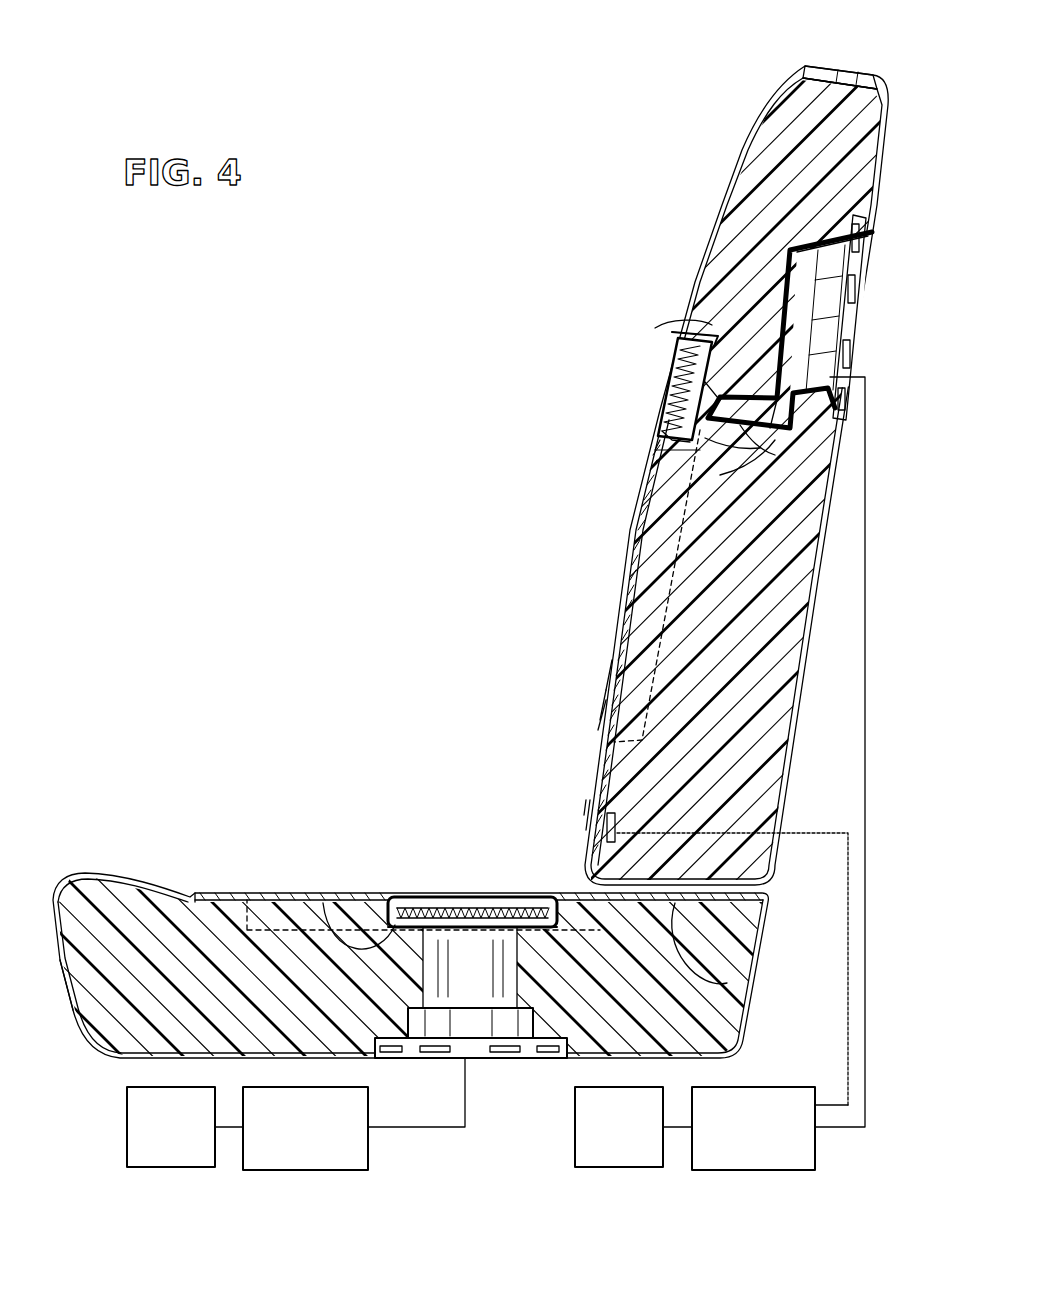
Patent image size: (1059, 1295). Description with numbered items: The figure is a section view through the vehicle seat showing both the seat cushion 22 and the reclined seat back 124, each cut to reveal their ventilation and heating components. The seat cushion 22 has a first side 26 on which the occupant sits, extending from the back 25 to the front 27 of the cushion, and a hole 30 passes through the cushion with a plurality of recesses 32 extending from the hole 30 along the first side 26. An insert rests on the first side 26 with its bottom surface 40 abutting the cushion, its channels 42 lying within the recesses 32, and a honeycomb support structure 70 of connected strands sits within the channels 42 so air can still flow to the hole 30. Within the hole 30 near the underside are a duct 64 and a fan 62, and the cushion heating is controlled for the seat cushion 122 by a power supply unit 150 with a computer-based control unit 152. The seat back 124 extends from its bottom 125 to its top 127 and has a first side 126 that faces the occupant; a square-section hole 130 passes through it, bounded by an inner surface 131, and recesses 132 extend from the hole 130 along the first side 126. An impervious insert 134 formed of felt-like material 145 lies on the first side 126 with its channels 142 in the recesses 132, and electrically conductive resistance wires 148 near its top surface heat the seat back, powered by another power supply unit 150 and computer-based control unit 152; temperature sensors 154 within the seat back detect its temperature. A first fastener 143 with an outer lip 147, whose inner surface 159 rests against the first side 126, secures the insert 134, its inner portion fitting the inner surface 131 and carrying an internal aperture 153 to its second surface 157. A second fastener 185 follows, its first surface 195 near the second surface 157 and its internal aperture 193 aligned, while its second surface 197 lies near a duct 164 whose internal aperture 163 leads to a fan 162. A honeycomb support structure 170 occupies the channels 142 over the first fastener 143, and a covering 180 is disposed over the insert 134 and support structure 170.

The seat cushion 22 is at (479, 963).
The back of the seat cushion 25 is at (770, 895).
The first side of the seat cushion 26 is at (215, 895).
The front of the seat cushion 27 is at (68, 1000).
The hole 30 is at (463, 940).
The recesses 32 is at (393, 908).
The bottom surface of the insert 40 is at (760, 927).
The channels 42 is at (388, 945).
The fan 62 is at (477, 1058).
The duct 64 is at (485, 990).
The honeycomb support structure 70 is at (415, 900).
The seat cushion 122 is at (100, 1046).
The seat back 124 is at (840, 84).
The bottom of the seat back 125 is at (727, 983).
The first side of the seat back 126 is at (585, 827).
The top of the seat back 127 is at (824, 69).
The hole 130 is at (782, 452).
The inner surface of the hole 131 is at (775, 440).
The recesses 132 is at (705, 438).
The impervious insert 134 is at (662, 446).
The channels 142 is at (680, 352).
The first fastener 143 is at (690, 345).
The felt-like material 145 is at (612, 660).
The outer lip 147 is at (700, 338).
The electrically conductive resistance wires 148 is at (605, 690).
The power supply unit 150 is at (168, 1167).
The computer-based control unit 152 is at (305, 1170).
The internal aperture 153 is at (662, 430).
The temperature sensors 154 is at (604, 832).
The second surface of the first fastener 157 is at (706, 382).
The inner surface of the outer lip 159 is at (740, 425).
The fan 162 is at (788, 268).
The internal aperture of the duct 163 is at (780, 320).
The duct 164 is at (762, 258).
The honeycomb support structure 170 is at (698, 388).
The covering 180 is at (760, 104).
The second fastener 185 is at (790, 240).
The internal aperture 193 is at (700, 325).
The first surface of the second fastener 195 is at (668, 410).
The second surface of the second fastener 197 is at (825, 522).